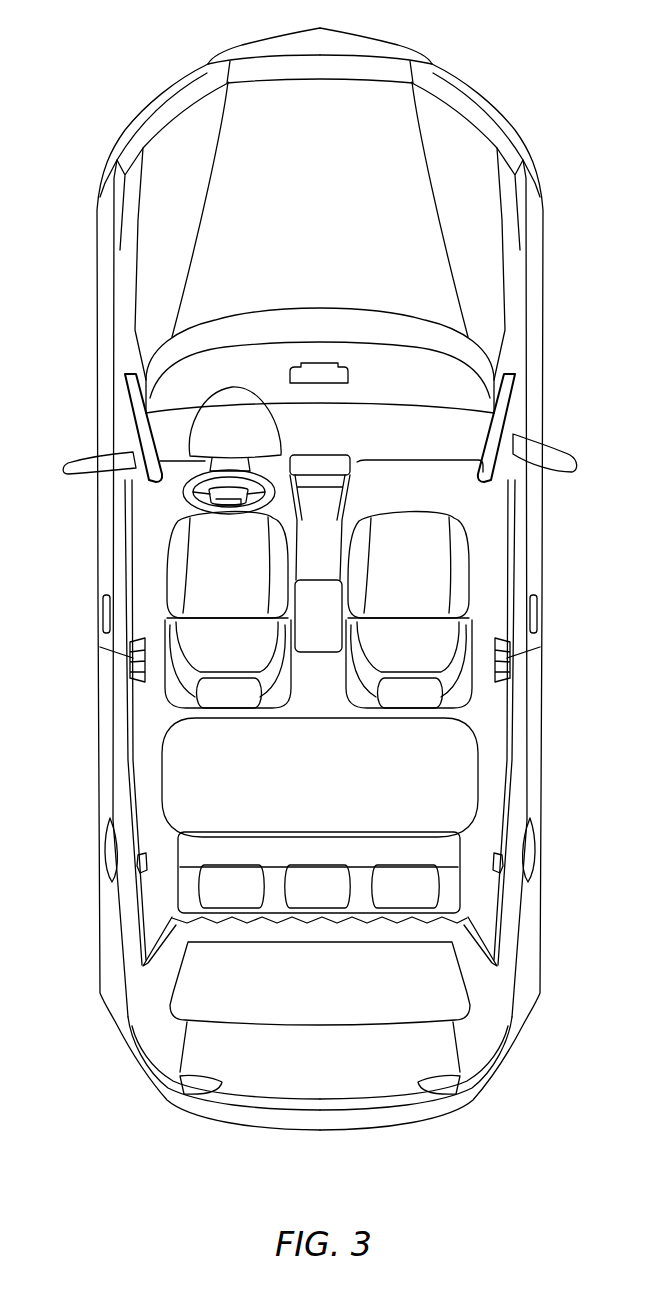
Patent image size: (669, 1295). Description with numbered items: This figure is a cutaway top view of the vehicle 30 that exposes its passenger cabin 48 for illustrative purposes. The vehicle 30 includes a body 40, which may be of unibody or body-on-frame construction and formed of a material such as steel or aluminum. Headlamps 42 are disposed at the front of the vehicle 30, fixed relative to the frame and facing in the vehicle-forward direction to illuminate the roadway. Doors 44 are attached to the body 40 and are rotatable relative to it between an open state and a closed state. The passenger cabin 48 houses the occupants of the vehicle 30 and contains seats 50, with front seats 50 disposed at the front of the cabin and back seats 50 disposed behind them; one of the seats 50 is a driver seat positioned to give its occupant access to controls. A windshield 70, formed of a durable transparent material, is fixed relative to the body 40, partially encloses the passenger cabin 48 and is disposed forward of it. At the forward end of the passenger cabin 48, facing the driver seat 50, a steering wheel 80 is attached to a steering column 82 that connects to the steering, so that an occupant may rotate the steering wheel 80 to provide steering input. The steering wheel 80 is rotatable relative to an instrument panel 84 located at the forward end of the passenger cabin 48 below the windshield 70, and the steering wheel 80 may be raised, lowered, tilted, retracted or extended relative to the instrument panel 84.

The vehicle 30 is at (46, 62).
The body 40 is at (107, 1006).
The headlamps 42 is at (320, 29).
The doors 44 is at (100, 607).
The passenger cabin 48 is at (512, 740).
The seats 50 is at (347, 568).
The windshield 70 is at (164, 368).
The steering wheel 80 is at (186, 502).
The steering column 82 is at (200, 466).
The instrument panel 84 is at (423, 462).